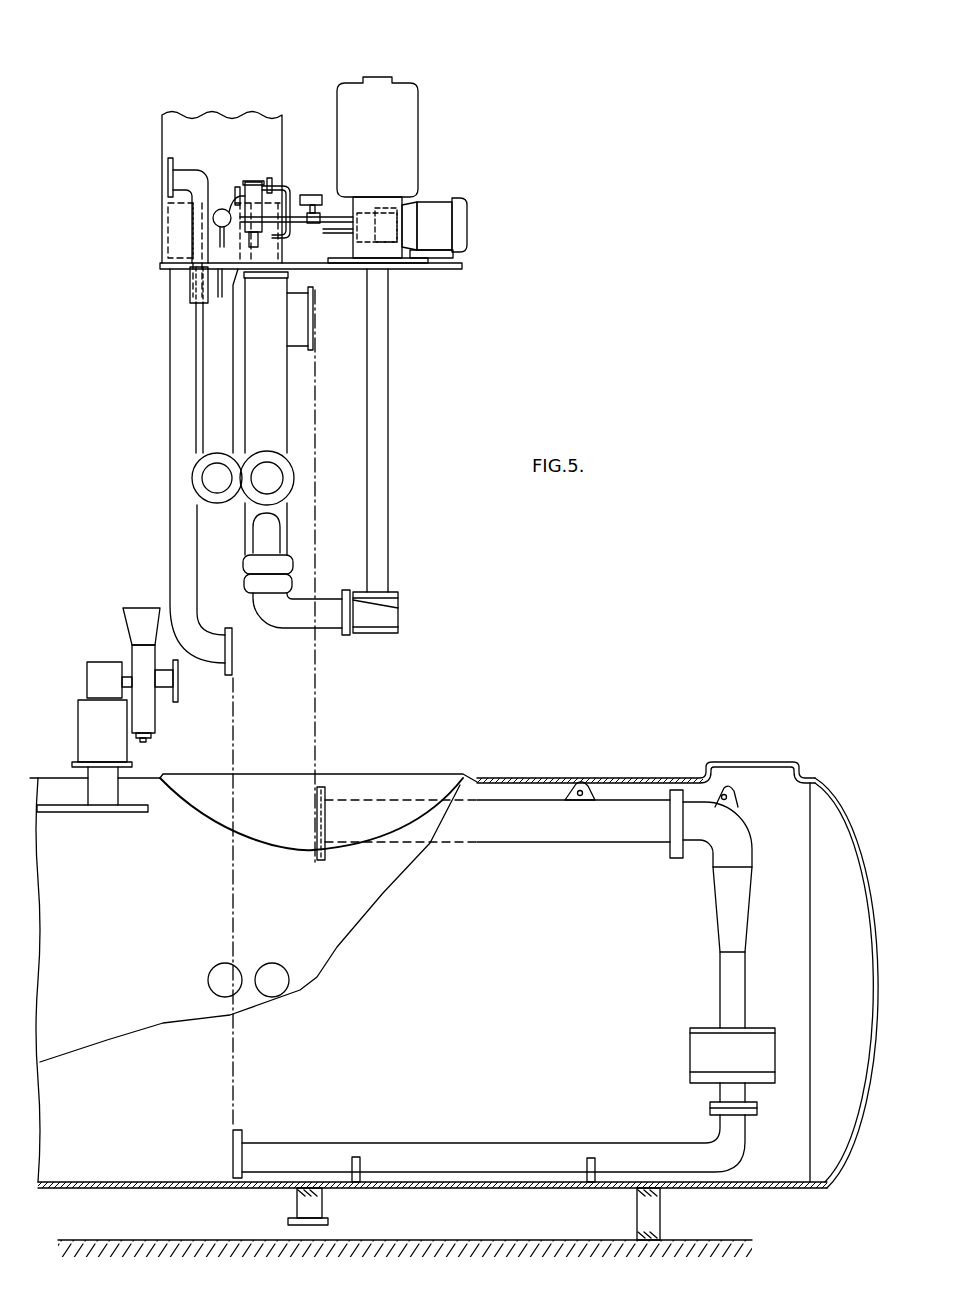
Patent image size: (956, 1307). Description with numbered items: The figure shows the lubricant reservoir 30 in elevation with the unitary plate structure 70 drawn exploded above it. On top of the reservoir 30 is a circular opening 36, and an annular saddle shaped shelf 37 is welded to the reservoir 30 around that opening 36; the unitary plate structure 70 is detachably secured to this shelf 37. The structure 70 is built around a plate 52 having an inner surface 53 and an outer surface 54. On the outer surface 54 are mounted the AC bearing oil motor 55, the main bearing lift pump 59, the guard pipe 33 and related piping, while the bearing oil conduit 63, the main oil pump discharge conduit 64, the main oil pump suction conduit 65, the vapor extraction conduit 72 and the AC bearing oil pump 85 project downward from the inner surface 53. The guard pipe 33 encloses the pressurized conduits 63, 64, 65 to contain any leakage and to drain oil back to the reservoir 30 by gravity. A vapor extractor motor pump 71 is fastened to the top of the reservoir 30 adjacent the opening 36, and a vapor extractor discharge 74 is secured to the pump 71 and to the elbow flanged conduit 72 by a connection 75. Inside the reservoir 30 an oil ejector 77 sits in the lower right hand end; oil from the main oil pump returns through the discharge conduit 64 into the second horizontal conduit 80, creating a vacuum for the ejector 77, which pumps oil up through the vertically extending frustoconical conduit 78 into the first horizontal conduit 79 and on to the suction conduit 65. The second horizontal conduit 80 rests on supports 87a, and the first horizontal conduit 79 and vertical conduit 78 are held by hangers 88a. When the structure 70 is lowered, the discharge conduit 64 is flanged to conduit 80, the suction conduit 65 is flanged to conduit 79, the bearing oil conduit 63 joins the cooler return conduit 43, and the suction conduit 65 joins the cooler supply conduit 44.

The reservoir 30 is at (552, 778).
The guard pipe 33 is at (230, 118).
The opening 36 is at (400, 790).
The annular saddle shaped shelf 37 is at (438, 785).
The external conduit 43 is at (198, 478).
The external conduit 44 is at (290, 478).
The plate 52 is at (462, 268).
The inner surface 53 is at (437, 275).
The outer surface 54 is at (183, 257).
The AC bearing oil motor 55 is at (405, 124).
The main bearing lift pump 59 is at (462, 212).
The bearing oil conduit 63 is at (212, 358).
The main oil pump discharge conduit 64 is at (172, 393).
The main oil pump suction conduit 65 is at (276, 395).
The unitary plate structure 70 is at (311, 93).
The vapor extractor motor pump 71 is at (92, 677).
The elbow flanged conduit 72 is at (175, 178).
The vapor extractor discharge 74 is at (135, 612).
The connection 75 is at (178, 690).
The oil ejector 77 is at (690, 1050).
The vertically extending frustoconical conduit 78 is at (722, 903).
The first horizontal conduit 79 is at (592, 840).
The second horizontal conduit 80 is at (556, 1145).
The AC bearing oil pump 85 is at (395, 607).
The supports 87a is at (358, 1157).
The hangers 88a is at (593, 797).